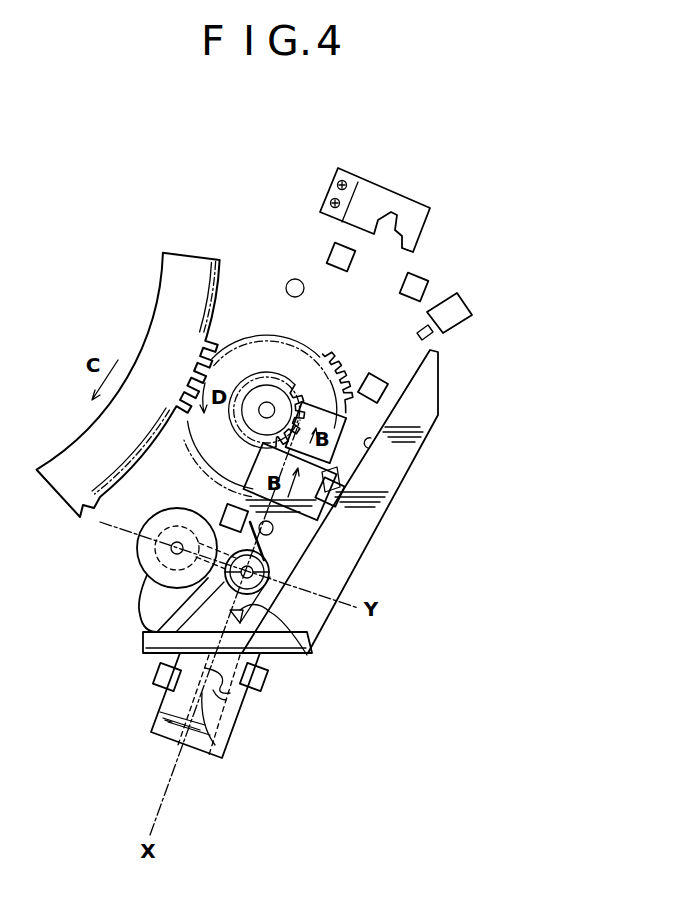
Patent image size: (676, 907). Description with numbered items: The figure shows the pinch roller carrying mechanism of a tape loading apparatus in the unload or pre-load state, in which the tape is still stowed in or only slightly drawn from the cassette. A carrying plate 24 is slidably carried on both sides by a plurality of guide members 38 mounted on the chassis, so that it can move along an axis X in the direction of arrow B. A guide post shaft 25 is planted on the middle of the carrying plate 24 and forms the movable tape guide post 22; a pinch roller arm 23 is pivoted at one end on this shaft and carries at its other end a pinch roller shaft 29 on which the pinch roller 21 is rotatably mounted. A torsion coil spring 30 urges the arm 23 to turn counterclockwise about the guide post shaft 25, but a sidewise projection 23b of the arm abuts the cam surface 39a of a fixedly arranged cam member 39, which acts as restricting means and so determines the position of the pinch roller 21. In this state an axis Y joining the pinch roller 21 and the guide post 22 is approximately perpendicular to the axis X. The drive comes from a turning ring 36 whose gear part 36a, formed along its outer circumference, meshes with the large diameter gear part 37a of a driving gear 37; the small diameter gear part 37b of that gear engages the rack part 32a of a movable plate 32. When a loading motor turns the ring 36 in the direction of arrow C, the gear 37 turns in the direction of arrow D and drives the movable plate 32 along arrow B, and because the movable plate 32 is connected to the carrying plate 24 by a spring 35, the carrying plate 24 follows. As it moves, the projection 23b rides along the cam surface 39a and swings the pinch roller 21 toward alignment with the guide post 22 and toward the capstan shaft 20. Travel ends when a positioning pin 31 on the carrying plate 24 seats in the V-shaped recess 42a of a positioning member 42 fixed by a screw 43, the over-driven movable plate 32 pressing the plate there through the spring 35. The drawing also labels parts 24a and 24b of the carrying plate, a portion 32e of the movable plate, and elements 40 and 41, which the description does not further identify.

The capstan shaft 20 is at (290, 281).
The pinch roller 21 is at (140, 556).
The movable tape guide post 22 is at (268, 598).
The pinch roller arm 23 is at (198, 535).
The sidewise projection 23b is at (142, 608).
The carrying plate 24 is at (168, 738).
The slide block side face 24a is at (168, 720).
The slide block bottom face 24b is at (215, 745).
The guide post shaft 25 is at (296, 571).
The pinch roller shaft 29 is at (168, 528).
The torsion coil spring 30 is at (300, 562).
The positioning pin 31 is at (272, 535).
The movable plate 32 is at (340, 366).
The rack part 32a is at (322, 354).
The rack end portion 32e is at (313, 653).
The spring 35 is at (228, 695).
The turning ring 36 is at (158, 300).
The gear part 36a is at (219, 262).
The driving gear 37 is at (200, 433).
The large diameter gear part 37a is at (243, 336).
The small diameter gear part 37b is at (238, 386).
The guide members 38 is at (330, 248).
The cam member 39 is at (376, 565).
The cam surface 39a is at (372, 446).
The stopper block 40 is at (466, 308).
The stopper pin 41 is at (430, 337).
The positioning member 42 is at (378, 188).
The V-shaped recess 42a is at (404, 230).
The screw 43 is at (330, 203).